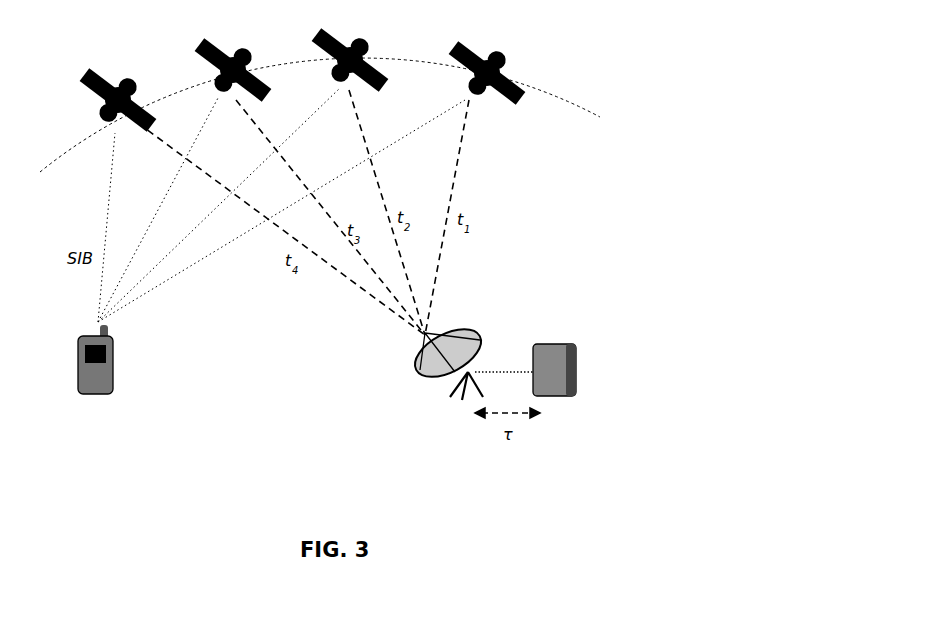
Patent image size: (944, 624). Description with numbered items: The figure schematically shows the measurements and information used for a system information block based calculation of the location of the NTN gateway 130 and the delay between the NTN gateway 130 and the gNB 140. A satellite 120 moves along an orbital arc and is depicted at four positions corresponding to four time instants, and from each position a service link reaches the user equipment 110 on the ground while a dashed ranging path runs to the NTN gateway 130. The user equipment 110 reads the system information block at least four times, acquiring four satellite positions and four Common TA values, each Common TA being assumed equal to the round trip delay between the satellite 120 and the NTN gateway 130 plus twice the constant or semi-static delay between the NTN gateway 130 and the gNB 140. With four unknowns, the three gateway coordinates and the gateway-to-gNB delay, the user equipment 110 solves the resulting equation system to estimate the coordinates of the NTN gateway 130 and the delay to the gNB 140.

The user equipment 110 is at (113, 372).
The satellite 120 is at (508, 64).
The NTN gateway 130 is at (478, 330).
The gNB 140 is at (566, 342).